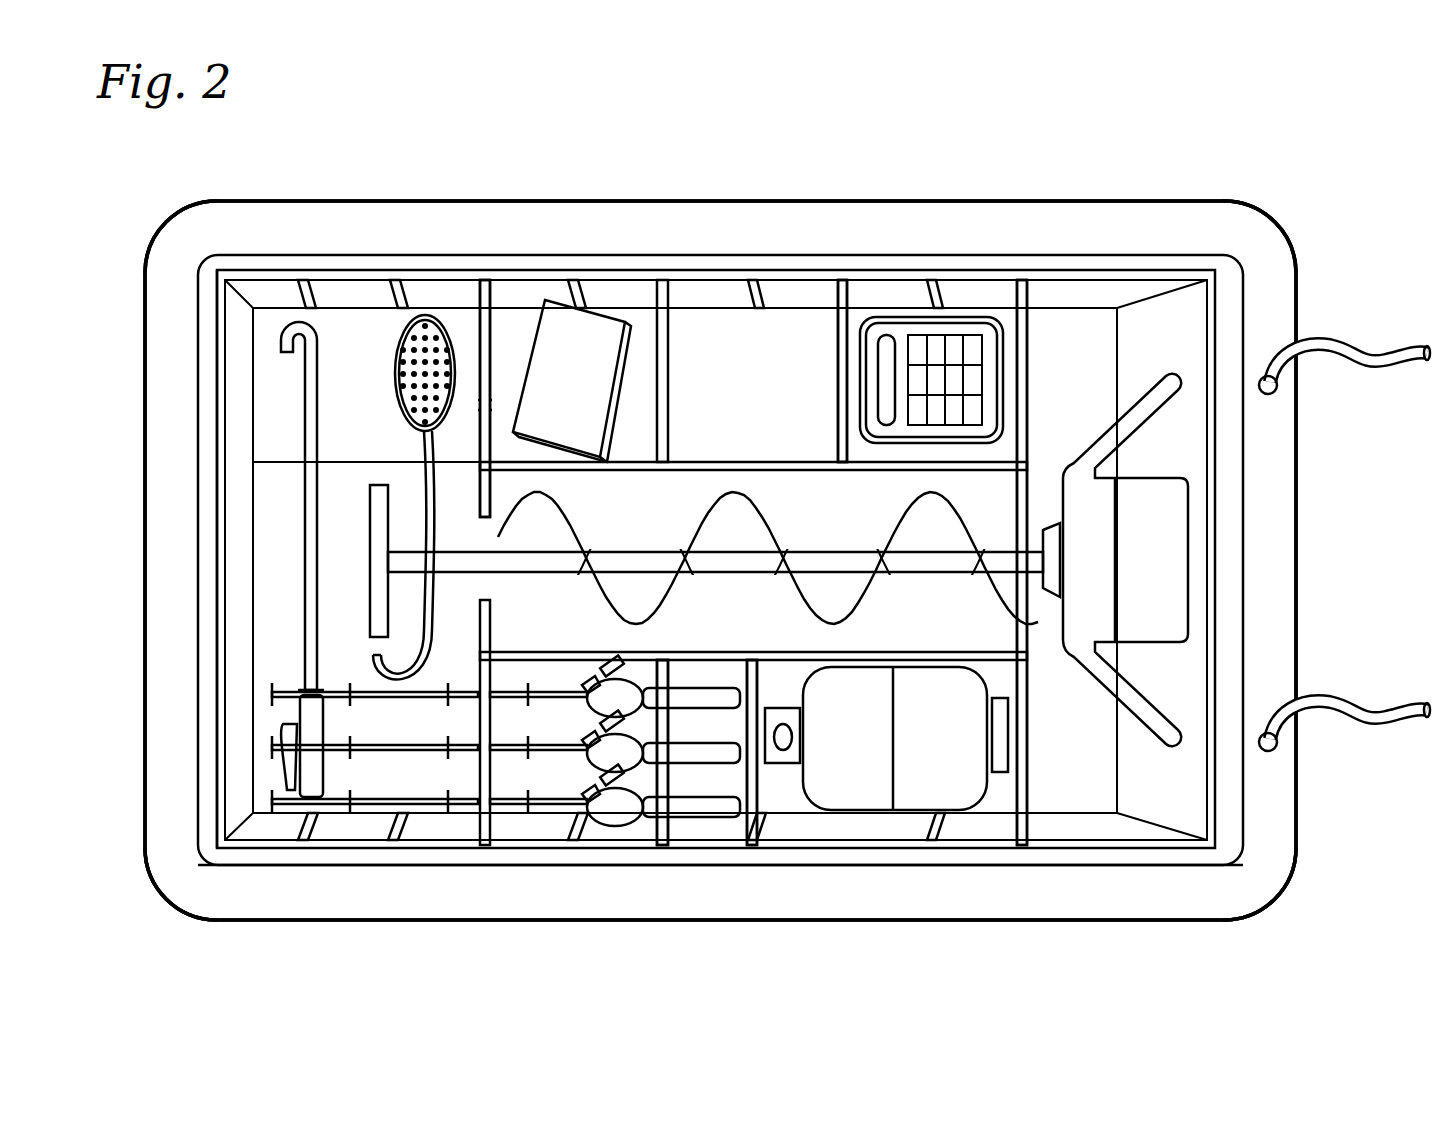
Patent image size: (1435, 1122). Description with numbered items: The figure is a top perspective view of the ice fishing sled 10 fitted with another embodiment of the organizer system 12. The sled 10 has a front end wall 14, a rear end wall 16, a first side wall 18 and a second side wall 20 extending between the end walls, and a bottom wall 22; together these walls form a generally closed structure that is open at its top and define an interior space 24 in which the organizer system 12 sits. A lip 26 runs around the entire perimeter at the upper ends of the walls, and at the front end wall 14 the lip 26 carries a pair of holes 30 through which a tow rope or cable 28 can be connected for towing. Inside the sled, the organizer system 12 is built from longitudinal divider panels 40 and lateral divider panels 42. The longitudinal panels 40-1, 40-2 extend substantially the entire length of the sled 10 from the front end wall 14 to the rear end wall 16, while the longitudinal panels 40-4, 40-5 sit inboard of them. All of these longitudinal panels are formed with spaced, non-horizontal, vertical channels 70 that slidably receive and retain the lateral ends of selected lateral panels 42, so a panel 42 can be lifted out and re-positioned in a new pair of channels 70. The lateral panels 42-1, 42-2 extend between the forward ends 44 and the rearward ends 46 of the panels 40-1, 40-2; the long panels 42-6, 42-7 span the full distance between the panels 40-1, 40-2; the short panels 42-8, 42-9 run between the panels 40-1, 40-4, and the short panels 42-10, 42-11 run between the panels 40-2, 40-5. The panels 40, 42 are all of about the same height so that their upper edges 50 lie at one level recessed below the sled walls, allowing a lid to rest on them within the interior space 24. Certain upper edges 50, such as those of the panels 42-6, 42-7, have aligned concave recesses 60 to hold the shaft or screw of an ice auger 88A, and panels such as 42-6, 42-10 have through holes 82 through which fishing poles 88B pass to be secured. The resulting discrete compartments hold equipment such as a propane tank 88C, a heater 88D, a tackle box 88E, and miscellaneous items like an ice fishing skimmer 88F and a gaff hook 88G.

The ice fishing sled 10 is at (1228, 136).
The organizer system 12 is at (828, 290).
The front end wall 14 is at (1225, 780).
The rear end wall 16 is at (215, 512).
The first side wall 18 is at (1110, 855).
The second side wall 20 is at (548, 257).
The bottom wall 22 is at (415, 770).
The interior space 24 is at (262, 415).
The lip 26 is at (1137, 225).
The tow rope or cable 28 is at (1352, 345).
The holes 30 is at (1262, 378).
The longitudinal divider panels 40 is at (253, 272).
The longitudinal divider panel 40-1 is at (249, 265).
The longitudinal divider panel 40-2 is at (580, 830).
The longitudinal divider panel 40-4 is at (1044, 306).
The longitudinal divider panel 40-5 is at (1030, 830).
The lateral divider panels 42 is at (650, 316).
The lateral divider panel 42-1 is at (1227, 668).
The lateral divider panel 42-2 is at (222, 690).
The lateral divider panel 42-6 is at (480, 290).
The lateral divider panel 42-7 is at (1037, 308).
The lateral divider panel 42-8 is at (703, 440).
The lateral divider panel 42-9 is at (840, 282).
The lateral divider panel 42-10 is at (680, 793).
The lateral divider panel 42-11 is at (770, 793).
The forward ends 44 is at (1236, 258).
The rearward ends 46 is at (223, 237).
The upper edges 50 is at (222, 362).
The concave recesses 60 is at (478, 524).
The channels 70 is at (317, 362).
The through holes 82 is at (487, 790).
The ice auger 88A is at (1190, 635).
The fishing poles 88B is at (612, 812).
The propane tank 88C is at (925, 792).
The heater 88D is at (968, 318).
The tackle box 88E is at (603, 318).
The ice fishing skimmer 88F is at (436, 316).
The gaff hook 88G is at (300, 340).